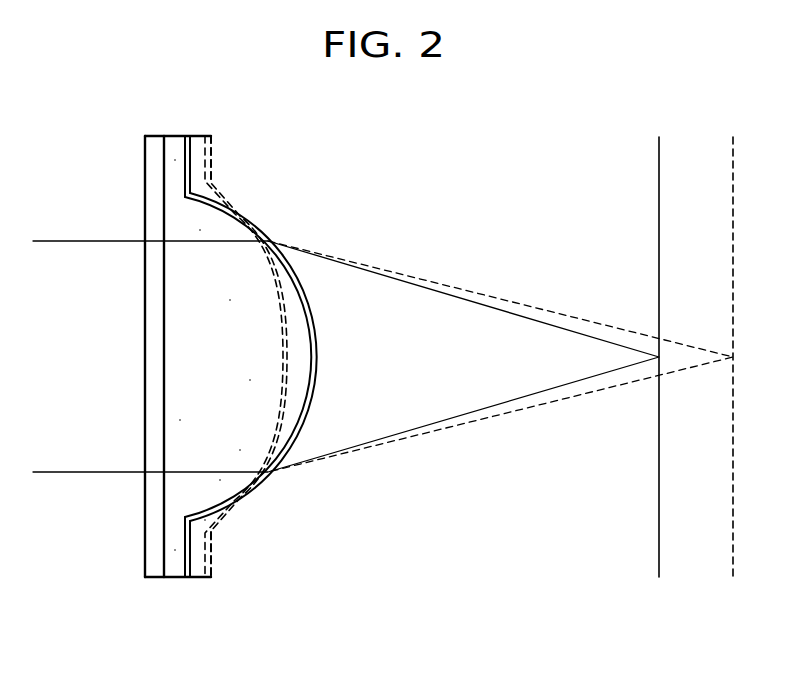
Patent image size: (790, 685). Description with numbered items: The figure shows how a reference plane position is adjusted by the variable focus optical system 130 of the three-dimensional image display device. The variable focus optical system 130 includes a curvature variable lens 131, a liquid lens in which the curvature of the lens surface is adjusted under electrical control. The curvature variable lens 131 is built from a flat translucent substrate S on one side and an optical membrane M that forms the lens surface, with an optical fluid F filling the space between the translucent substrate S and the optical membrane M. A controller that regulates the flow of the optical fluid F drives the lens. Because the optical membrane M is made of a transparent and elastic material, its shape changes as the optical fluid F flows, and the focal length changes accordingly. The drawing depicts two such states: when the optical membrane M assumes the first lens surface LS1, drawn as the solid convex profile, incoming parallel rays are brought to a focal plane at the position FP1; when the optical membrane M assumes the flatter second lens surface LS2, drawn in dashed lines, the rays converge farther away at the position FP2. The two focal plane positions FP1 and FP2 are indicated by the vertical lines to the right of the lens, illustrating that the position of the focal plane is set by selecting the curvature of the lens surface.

The variable focus optical system 130 is at (302, 180).
The curvature variable lens 131 is at (173, 590).
The translucent substrate S is at (150, 273).
The optical membrane M is at (190, 136).
The optical fluid F is at (205, 371).
The first lens surface LS1 is at (288, 262).
The second lens surface LS2 is at (283, 305).
The focal plane position (first) FP1 is at (659, 160).
The focal plane position (second) FP2 is at (733, 160).